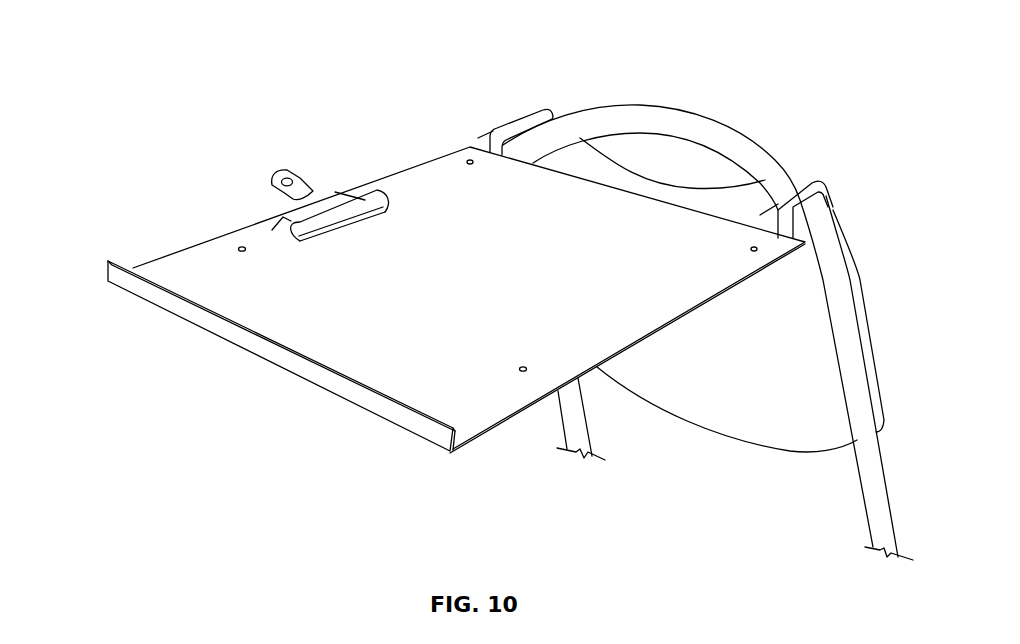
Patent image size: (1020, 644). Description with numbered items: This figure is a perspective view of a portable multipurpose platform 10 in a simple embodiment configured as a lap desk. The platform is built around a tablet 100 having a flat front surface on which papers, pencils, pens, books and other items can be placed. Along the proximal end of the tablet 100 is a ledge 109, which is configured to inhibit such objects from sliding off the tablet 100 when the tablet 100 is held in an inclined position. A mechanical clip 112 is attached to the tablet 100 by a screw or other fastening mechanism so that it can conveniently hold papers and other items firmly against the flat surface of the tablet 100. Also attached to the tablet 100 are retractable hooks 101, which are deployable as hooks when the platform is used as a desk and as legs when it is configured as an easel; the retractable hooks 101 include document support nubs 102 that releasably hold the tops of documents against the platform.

The portable multipurpose platform 10 is at (175, 157).
The tablet 100 is at (177, 254).
The retractable hooks 101 is at (520, 118).
The document support nubs 102 is at (490, 133).
The ledge 109 is at (278, 366).
The mechanical clip 112 is at (327, 197).